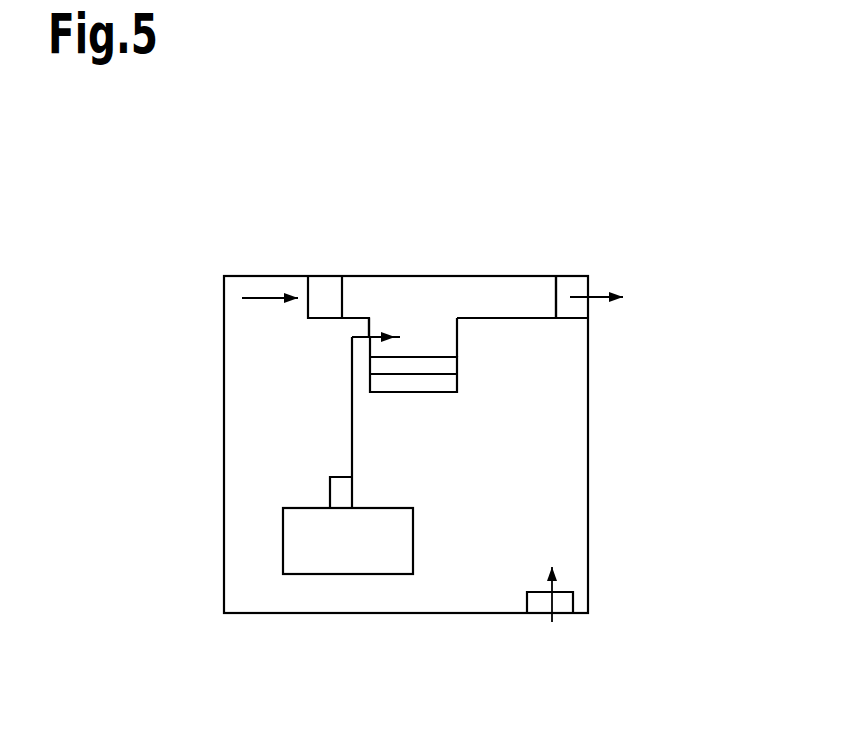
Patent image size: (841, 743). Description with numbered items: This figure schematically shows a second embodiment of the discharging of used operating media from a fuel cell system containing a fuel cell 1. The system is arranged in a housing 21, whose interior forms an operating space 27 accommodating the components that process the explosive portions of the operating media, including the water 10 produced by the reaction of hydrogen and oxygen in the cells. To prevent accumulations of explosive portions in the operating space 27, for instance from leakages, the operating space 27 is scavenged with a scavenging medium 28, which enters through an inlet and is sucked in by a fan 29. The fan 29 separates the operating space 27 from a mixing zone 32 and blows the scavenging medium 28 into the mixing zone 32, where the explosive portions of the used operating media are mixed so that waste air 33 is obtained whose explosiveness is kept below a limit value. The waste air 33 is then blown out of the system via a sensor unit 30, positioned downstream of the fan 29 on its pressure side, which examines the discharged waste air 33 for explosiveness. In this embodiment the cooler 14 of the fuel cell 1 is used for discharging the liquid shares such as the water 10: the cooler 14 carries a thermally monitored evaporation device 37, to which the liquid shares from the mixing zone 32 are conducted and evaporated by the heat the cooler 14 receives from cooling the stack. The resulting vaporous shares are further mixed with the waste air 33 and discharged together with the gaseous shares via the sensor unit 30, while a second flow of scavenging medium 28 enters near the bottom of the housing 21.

The fuel cell 1 is at (312, 558).
The water 10 is at (388, 335).
The cooler 14 is at (445, 382).
The housing 21 is at (211, 462).
The operating space 27 is at (258, 378).
The scavenging medium 28 is at (289, 298).
The fan 29 is at (323, 290).
The sensor unit 30 is at (577, 287).
The mixing zone 32 is at (441, 287).
The waste air 33 is at (623, 297).
The evaporation device 37 is at (440, 363).